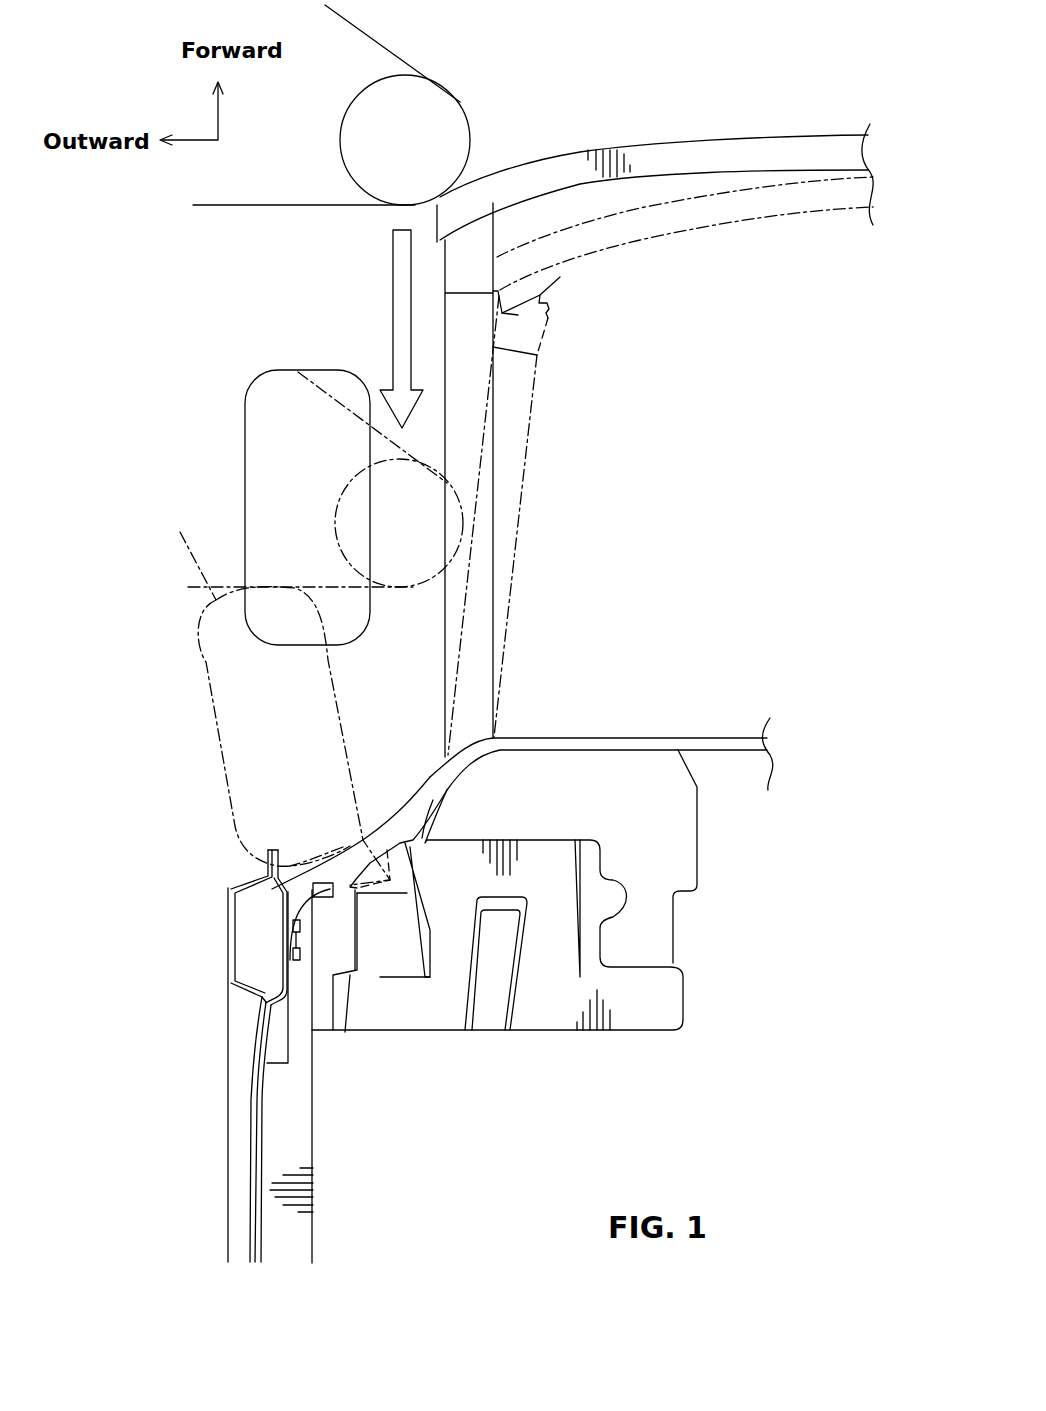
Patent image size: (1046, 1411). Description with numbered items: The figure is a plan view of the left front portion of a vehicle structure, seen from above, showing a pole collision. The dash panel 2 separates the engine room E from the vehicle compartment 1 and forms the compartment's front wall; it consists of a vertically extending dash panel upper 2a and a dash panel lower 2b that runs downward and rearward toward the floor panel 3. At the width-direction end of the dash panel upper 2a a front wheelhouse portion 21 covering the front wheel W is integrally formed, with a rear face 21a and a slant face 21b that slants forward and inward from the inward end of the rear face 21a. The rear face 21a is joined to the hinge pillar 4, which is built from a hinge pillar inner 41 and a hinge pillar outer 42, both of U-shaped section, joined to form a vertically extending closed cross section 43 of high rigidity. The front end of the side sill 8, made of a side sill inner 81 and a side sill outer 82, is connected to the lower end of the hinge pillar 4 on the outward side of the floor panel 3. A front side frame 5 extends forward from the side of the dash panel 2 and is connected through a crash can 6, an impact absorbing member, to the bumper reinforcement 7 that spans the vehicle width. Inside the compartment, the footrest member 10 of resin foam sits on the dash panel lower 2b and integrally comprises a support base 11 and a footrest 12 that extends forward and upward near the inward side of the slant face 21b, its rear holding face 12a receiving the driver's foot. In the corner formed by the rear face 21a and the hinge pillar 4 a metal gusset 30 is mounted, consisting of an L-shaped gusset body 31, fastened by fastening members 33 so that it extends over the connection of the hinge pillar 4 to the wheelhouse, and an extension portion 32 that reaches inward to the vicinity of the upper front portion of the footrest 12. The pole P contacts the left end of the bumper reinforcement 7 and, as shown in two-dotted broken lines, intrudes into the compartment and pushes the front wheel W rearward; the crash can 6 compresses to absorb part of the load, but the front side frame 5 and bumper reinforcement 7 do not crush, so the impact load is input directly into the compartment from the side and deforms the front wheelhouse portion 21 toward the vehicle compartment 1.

The vehicle compartment 1 is at (521, 1172).
The dash panel 2 is at (601, 797).
The dash panel upper 2a is at (558, 742).
The dash panel lower 2b is at (615, 782).
The floor panel 3 is at (343, 1127).
The hinge pillar 4 is at (219, 935).
The hinge pillar inner 41 is at (283, 907).
The hinge pillar outer 42 is at (227, 973).
The closed cross section 43 is at (248, 938).
The front side frame 5 is at (493, 445).
The crash can 6 is at (477, 250).
The bumper reinforcement 7 is at (693, 197).
The side sill 8 is at (214, 1075).
The side sill inner 81 is at (285, 1223).
The side sill outer 82 is at (238, 1148).
The footrest member 10 is at (503, 976).
The support base 11 is at (548, 1000).
The footrest 12 is at (388, 972).
The holding face 12a is at (387, 958).
The front wheelhouse portion 21 is at (381, 844).
The rear face 21a is at (300, 880).
The slant face 21b is at (447, 800).
The gusset 30 is at (340, 862).
The gusset body 31 is at (307, 903).
The extension portion 32 is at (360, 853).
The fastening member 33 is at (307, 900).
The pole P is at (440, 128).
The front wheel W is at (260, 525).
The engine room E is at (712, 480).